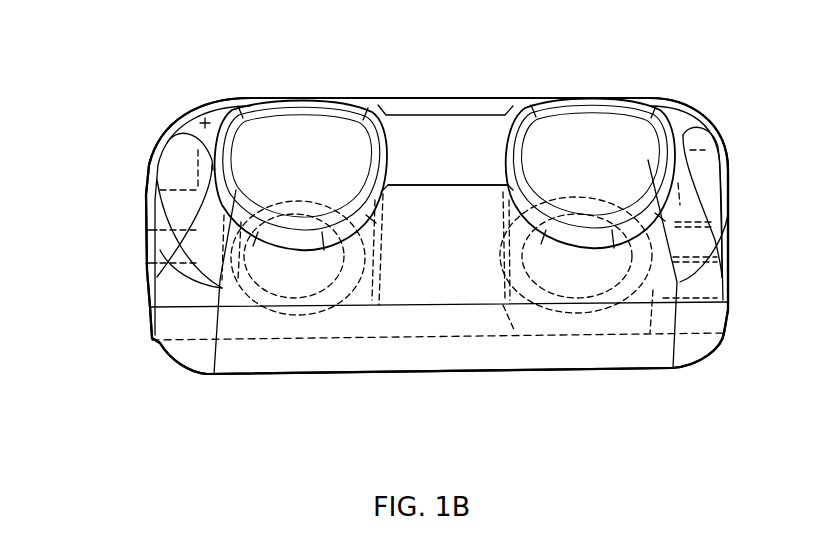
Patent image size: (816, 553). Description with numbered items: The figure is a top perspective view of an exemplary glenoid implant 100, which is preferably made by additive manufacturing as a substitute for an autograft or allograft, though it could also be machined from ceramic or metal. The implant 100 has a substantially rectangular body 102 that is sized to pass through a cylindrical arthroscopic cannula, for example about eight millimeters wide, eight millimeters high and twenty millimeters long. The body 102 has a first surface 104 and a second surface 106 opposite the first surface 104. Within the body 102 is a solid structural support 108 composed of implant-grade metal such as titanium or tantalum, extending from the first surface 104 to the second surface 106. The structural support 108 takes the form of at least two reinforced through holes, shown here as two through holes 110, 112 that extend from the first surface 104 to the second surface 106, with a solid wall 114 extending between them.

The glenoid implant 100 is at (106, 137).
The body 102 is at (693, 118).
The first surface 104 is at (437, 107).
The second surface 106 is at (532, 371).
The structural support 108 is at (472, 143).
The through hole 110 is at (297, 137).
The through hole 112 is at (596, 132).
The solid wall 114 is at (423, 258).